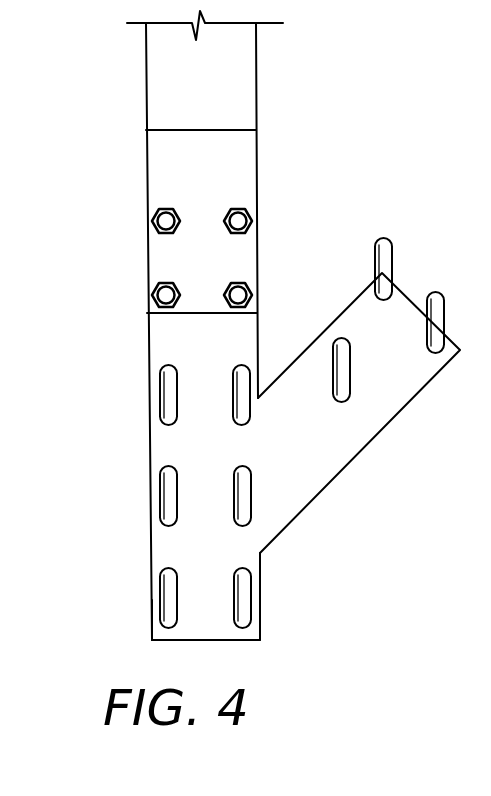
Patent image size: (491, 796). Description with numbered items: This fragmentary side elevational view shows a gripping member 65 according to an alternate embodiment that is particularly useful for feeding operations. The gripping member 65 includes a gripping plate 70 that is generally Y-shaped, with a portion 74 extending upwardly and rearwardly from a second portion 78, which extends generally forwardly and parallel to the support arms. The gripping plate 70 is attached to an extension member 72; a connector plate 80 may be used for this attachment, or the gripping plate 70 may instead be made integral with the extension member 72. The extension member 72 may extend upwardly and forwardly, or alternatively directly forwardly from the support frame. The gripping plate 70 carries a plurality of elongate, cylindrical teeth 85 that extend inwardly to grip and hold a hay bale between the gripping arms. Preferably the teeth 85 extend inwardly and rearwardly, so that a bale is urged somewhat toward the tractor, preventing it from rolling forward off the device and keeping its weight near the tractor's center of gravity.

The gripping member 65 is at (317, 522).
The gripping plate 70 is at (308, 452).
The extension member 72 is at (146, 72).
The portion 74 is at (405, 408).
The second portion 78 is at (152, 617).
The connector plate 80 is at (172, 258).
The teeth 85 is at (233, 375).